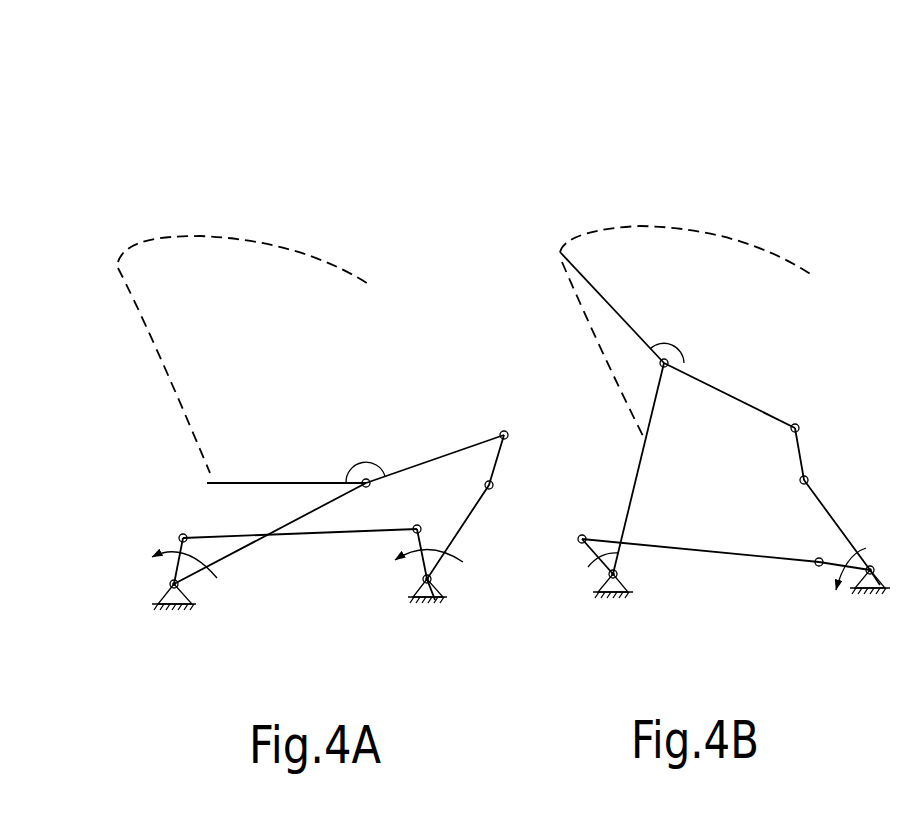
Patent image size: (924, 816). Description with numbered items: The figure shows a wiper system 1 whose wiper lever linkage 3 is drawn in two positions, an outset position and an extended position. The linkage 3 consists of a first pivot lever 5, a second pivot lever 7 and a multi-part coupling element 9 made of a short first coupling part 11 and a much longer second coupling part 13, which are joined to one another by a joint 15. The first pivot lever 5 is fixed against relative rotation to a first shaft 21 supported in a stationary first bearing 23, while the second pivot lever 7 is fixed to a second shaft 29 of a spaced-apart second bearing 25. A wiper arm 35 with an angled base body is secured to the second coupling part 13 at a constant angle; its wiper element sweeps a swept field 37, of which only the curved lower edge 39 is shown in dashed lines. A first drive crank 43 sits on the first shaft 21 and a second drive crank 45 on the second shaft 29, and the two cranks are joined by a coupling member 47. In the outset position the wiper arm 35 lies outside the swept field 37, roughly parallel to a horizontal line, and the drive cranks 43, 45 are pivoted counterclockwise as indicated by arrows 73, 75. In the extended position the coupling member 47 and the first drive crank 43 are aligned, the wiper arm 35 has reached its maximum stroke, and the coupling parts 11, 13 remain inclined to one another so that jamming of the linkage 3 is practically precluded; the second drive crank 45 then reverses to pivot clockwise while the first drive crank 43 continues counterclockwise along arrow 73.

In FIG. 4A, the wiper system 1 is at (228, 200).
In FIG. 4B, the wiper system 1 is at (768, 182).
In FIG. 4A, the wiper lever linkage 3 is at (474, 392).
In FIG. 4B, the wiper lever linkage 3 is at (852, 410).
In FIG. 4A, the first pivot lever 5 is at (463, 524).
In FIG. 4B, the first pivot lever 5 is at (838, 524).
In FIG. 4A, the second pivot lever 7 is at (307, 512).
In FIG. 4B, the second pivot lever 7 is at (633, 483).
In FIG. 4A, the coupling element 9 is at (450, 452).
In FIG. 4B, the coupling element 9 is at (765, 408).
In FIG. 4A, the first coupling part 11 is at (498, 465).
In FIG. 4B, the first coupling part 11 is at (803, 452).
In FIG. 4A, the second coupling part 13 is at (405, 470).
In FIG. 4B, the second coupling part 13 is at (712, 385).
In FIG. 4A, the joint 15 is at (508, 428).
In FIG. 4B, the joint 15 is at (805, 420).
In FIG. 4A, the first shaft 21 is at (432, 600).
In FIG. 4B, the first shaft 21 is at (873, 592).
In FIG. 4A, the first bearing 23 is at (417, 607).
In FIG. 4A, the second bearing 25 is at (165, 614).
In FIG. 4A, the second shaft 29 is at (167, 578).
In FIG. 4B, the second shaft 29 is at (608, 590).
In FIG. 4A, the wiper arm 35 is at (245, 483).
In FIG. 4B, the wiper arm 35 is at (590, 282).
In FIG. 4A, the swept field 37 is at (165, 229).
In FIG. 4B, the swept field 37 is at (632, 214).
In FIG. 4A, the lower edge 39 is at (253, 241).
In FIG. 4B, the lower edge 39 is at (690, 228).
In FIG. 4A, the first drive crank 43 is at (415, 565).
In FIG. 4B, the first drive crank 43 is at (820, 568).
In FIG. 4A, the second drive crank 45 is at (170, 542).
In FIG. 4B, the second drive crank 45 is at (597, 553).
In FIG. 4A, the coupling member 47 is at (313, 540).
In FIG. 4B, the coupling member 47 is at (735, 556).
In FIG. 4A, the arrow 73 is at (433, 540).
In FIG. 4B, the arrow 73 is at (863, 545).
In FIG. 4A, the arrow 75 is at (200, 567).